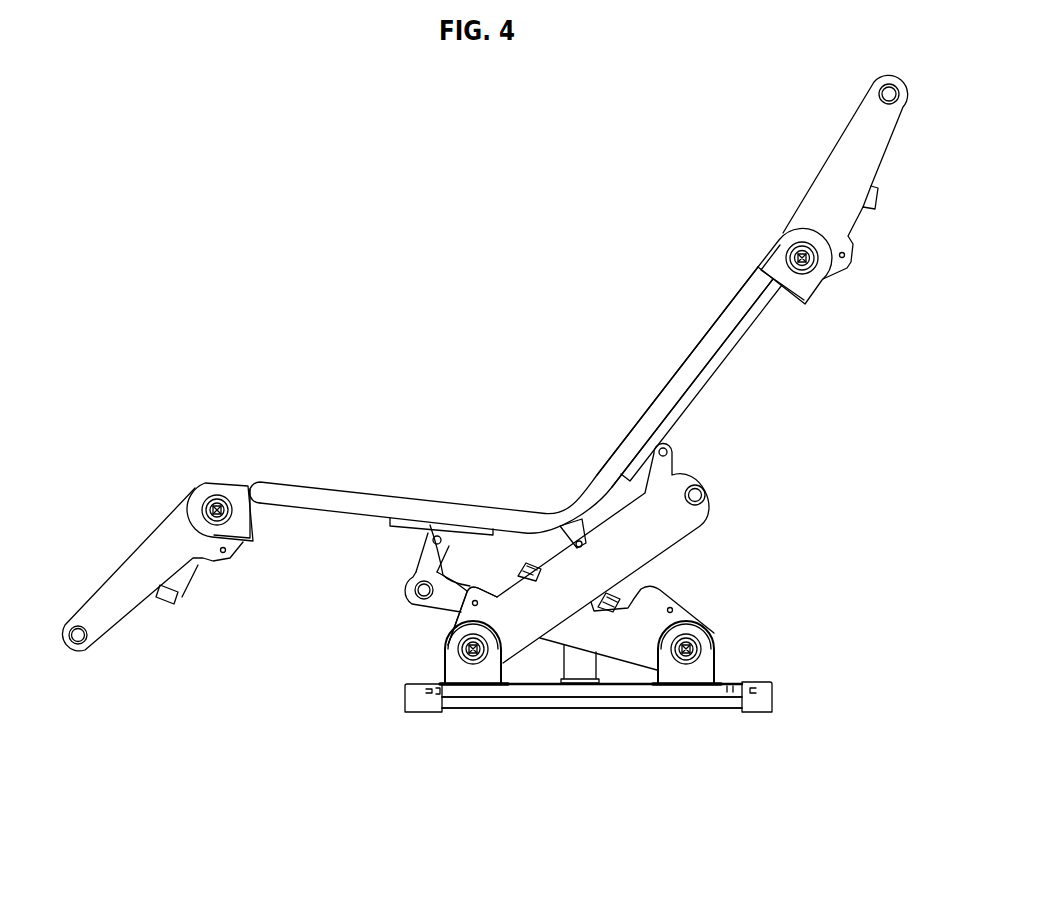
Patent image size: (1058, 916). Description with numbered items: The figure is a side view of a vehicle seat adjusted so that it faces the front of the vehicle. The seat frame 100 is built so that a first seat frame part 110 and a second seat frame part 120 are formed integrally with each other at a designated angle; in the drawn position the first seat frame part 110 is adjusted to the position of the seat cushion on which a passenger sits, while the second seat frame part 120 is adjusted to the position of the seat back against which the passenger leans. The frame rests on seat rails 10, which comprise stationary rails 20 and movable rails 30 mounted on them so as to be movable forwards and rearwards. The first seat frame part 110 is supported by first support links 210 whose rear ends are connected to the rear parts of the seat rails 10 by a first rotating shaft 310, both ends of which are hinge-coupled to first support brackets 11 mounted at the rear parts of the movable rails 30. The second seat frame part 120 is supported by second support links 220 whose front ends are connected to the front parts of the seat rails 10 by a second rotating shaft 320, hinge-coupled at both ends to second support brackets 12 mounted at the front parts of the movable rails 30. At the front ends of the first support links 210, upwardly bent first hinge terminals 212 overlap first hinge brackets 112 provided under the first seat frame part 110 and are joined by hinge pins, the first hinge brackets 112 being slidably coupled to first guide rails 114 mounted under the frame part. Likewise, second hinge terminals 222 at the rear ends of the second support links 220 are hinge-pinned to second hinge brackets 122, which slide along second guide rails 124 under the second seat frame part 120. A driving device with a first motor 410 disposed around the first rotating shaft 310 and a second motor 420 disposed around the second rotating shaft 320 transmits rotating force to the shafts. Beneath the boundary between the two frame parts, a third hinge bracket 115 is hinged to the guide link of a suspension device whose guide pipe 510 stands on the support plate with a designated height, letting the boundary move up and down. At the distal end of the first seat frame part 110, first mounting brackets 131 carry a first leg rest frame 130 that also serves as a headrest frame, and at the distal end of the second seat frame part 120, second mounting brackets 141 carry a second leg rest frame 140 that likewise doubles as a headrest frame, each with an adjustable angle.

The seat rails 10 is at (520, 718).
The first support brackets 11 is at (713, 670).
The second support brackets 12 is at (472, 670).
The stationary rails 20 is at (628, 700).
The movable rails 30 is at (680, 692).
The seat frame 100 is at (525, 407).
The first seat frame part 110 is at (400, 497).
The first hinge brackets 112 is at (416, 535).
The first guide rails 114 is at (393, 520).
The third hinge bracket 115 is at (573, 530).
The second seat frame part 120 is at (648, 408).
The second hinge brackets 122 is at (666, 448).
The second guide rails 124 is at (690, 390).
The first leg rest frame 130 is at (126, 545).
The first mounting brackets 131 is at (237, 489).
The second leg rest frame 140 is at (798, 184).
The second mounting brackets 141 is at (806, 283).
The first support links 210 is at (413, 617).
The first hinge terminals 212 is at (412, 582).
The second support links 220 is at (693, 527).
The second hinge terminals 222 is at (675, 468).
The first rotating shaft 310 is at (695, 633).
The second rotating shaft 320 is at (462, 648).
The first motor 410 is at (637, 590).
The second motor 420 is at (513, 573).
The guide pipe 510 is at (577, 662).